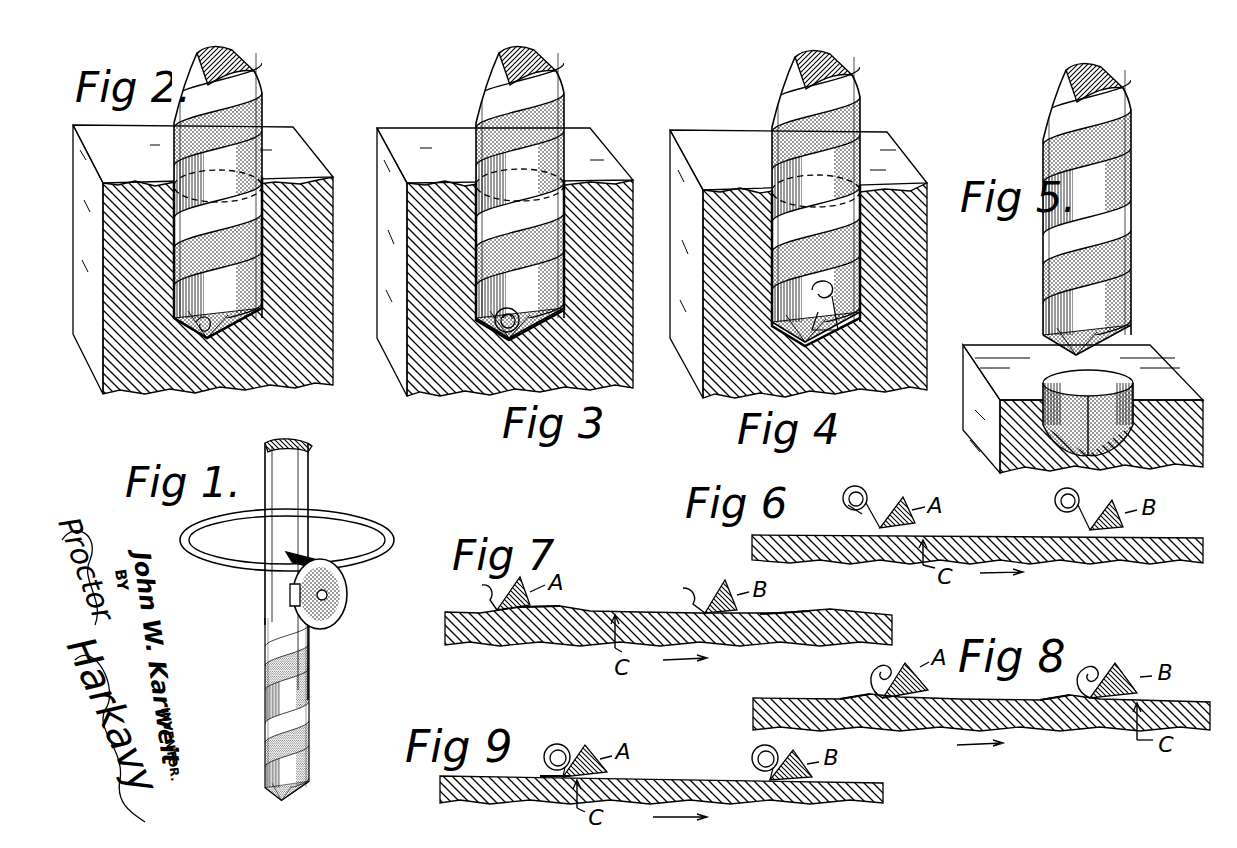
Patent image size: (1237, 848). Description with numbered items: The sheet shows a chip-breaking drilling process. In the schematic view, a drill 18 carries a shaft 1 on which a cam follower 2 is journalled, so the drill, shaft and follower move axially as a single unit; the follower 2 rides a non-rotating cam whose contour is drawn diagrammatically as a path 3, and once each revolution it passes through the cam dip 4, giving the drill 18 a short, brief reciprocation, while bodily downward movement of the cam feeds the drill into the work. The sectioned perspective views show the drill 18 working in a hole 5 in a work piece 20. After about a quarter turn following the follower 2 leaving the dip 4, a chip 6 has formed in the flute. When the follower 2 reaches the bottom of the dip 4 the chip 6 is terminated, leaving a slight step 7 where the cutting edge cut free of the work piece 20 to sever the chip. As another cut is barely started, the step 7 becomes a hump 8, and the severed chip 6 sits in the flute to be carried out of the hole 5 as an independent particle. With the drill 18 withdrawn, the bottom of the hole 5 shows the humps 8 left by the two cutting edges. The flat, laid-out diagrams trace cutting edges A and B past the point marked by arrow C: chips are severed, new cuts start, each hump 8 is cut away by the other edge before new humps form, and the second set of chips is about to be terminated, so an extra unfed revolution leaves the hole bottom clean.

In FIG. 1, the shaft 1 is at (347, 593).
In FIG. 1, the cam follower 2 is at (340, 612).
In FIG. 1, the cam path 3 is at (337, 512).
In FIG. 1, the cam dip 4 is at (320, 560).
In FIG. 2, the hole 5 is at (198, 172).
In FIG. 3, the hole 5 is at (478, 170).
In FIG. 4, the hole 5 is at (774, 174).
In FIG. 5, the hole 5 is at (1068, 371).
In FIG. 2, the chip 6 is at (207, 340).
In FIG. 4, the chip 6 is at (828, 294).
In FIG. 6, the chip 6 is at (867, 490).
In FIG. 7, the chip 6 is at (683, 588).
In FIG. 8, the chip 6 is at (887, 667).
In FIG. 9, the chip 6 is at (570, 741).
In FIG. 3, the step 7 is at (523, 342).
In FIG. 4, the hump 8 is at (850, 348).
In FIG. 5, the hump 8 is at (1081, 396).
In FIG. 7, the hump 8 is at (553, 608).
In FIG. 8, the hump 8 is at (852, 694).
In FIG. 9, the hump 8 is at (552, 744).
In FIG. 2, the drill 18 is at (247, 100).
In FIG. 3, the drill 18 is at (550, 105).
In FIG. 4, the drill 18 is at (848, 106).
In FIG. 5, the drill 18 is at (1073, 120).
In FIG. 1, the drill 18 is at (300, 688).
In FIG. 2, the work piece 20 is at (293, 128).
In FIG. 3, the work piece 20 is at (505, 262).
In FIG. 4, the work piece 20 is at (705, 132).
In FIG. 5, the work piece 20 is at (1003, 346).
In FIG. 6, the work piece 20 is at (1157, 540).
In FIG. 7, the work piece 20 is at (827, 618).
In FIG. 8, the work piece 20 is at (1065, 728).
In FIG. 9, the work piece 20 is at (887, 798).